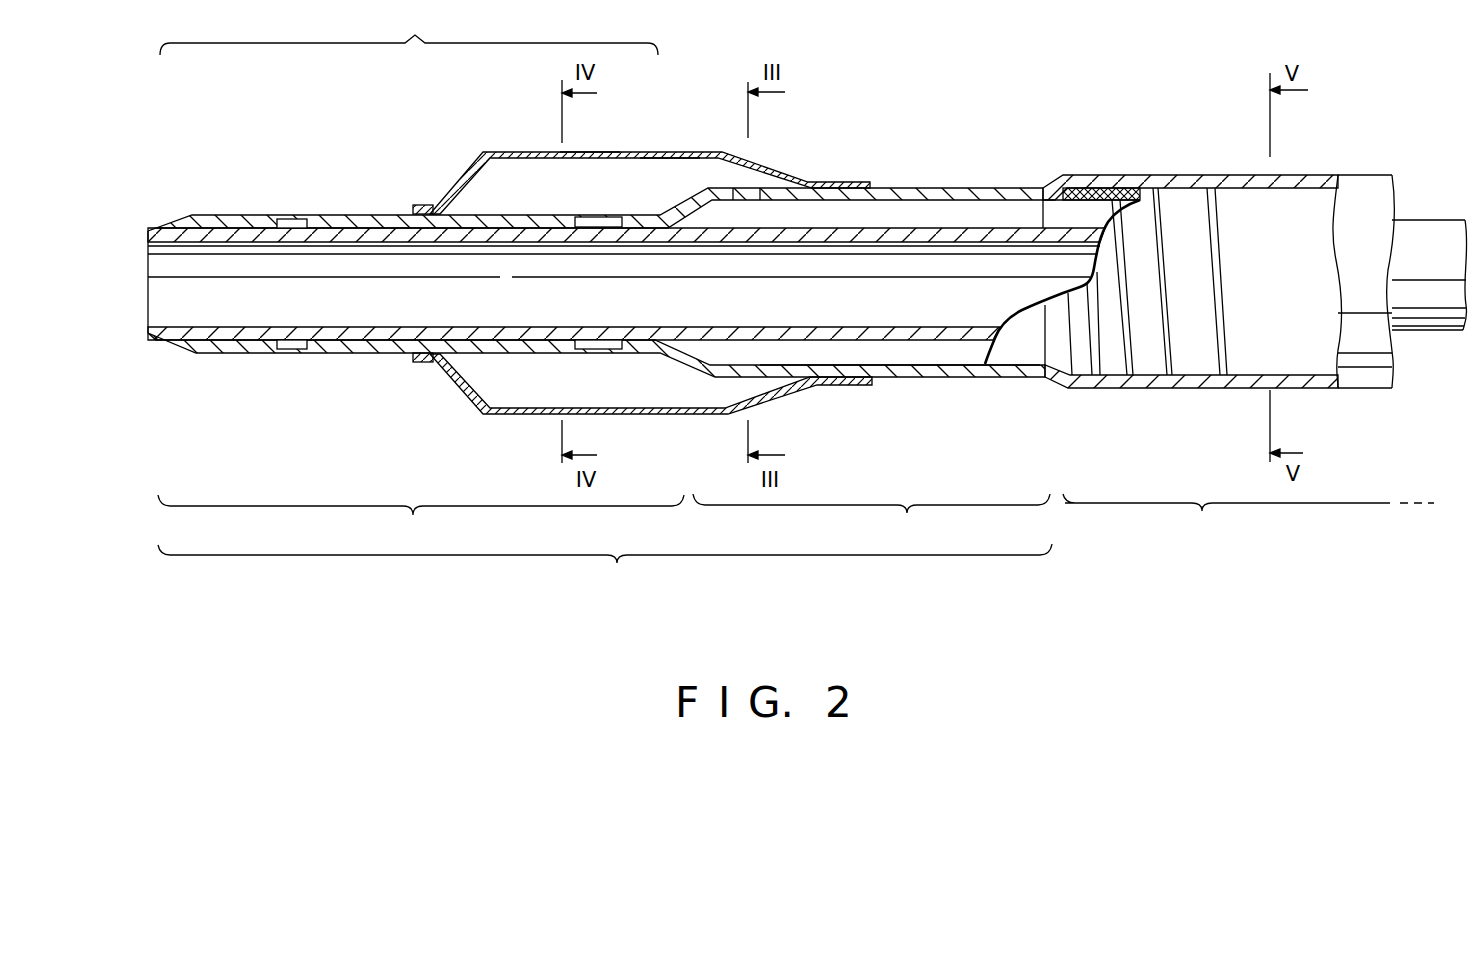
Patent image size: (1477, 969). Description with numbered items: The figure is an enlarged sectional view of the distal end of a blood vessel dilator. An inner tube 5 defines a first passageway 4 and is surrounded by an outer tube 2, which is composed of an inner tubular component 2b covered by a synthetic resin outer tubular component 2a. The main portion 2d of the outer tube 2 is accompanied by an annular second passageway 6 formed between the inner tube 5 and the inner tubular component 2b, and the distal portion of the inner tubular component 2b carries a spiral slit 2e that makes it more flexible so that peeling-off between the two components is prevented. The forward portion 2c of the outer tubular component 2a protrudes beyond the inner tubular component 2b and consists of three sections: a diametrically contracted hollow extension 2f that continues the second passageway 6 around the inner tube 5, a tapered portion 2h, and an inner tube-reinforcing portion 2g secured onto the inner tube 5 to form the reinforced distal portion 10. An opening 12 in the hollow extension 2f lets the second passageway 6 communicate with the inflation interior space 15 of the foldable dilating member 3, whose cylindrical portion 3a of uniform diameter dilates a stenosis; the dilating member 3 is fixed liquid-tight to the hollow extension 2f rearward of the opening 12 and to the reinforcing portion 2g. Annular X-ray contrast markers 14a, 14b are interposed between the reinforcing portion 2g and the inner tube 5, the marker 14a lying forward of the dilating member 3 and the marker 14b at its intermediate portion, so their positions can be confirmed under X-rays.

The outer tube 2 is at (1368, 192).
The outer tubular component 2a is at (367, 350).
The inner tubular component 2b is at (1105, 188).
The forward portion 2c is at (605, 569).
The main portion 2d is at (1209, 360).
The spiral slit 2e is at (1090, 190).
The hollow extension 2f is at (871, 520).
The inner tube-reinforcing portion 2g is at (421, 522).
The tapered portion 2h is at (683, 364).
The dilating member 3 is at (636, 147).
The cylindrical portion 3a is at (588, 152).
The first passageway 4 is at (450, 305).
The inner tube 5 is at (220, 337).
The second passageway 6 is at (920, 356).
The reinforced distal portion 10 is at (409, 28).
The opening 12 is at (757, 195).
The X-ray contrast marker 14a is at (300, 348).
The X-ray contrast marker 14b is at (585, 217).
The inflation interior space 15 is at (675, 172).